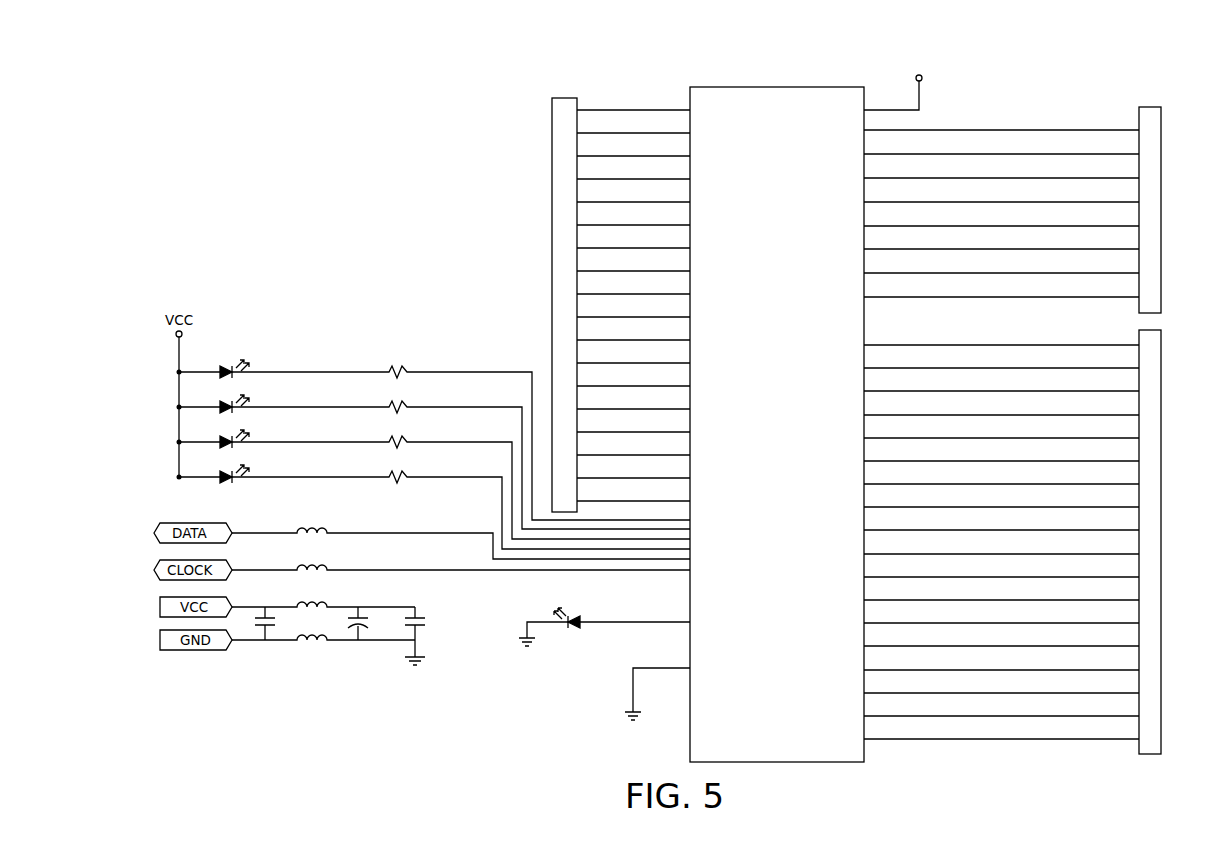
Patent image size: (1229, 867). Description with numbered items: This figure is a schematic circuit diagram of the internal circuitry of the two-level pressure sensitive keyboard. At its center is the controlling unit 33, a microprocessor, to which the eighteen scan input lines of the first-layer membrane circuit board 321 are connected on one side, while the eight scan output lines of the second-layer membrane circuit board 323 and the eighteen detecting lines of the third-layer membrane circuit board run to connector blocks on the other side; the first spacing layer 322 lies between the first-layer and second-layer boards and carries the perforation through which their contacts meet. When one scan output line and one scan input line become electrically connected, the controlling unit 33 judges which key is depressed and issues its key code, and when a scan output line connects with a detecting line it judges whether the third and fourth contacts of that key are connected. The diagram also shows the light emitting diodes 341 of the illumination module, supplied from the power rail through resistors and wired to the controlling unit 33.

The controlling unit 33 is at (778, 97).
The first-layer membrane circuit board 321 is at (562, 104).
The first spacing layer 322 is at (1145, 182).
The second-layer membrane circuit board 323 is at (1145, 532).
The light emitting diode 341 is at (578, 630).